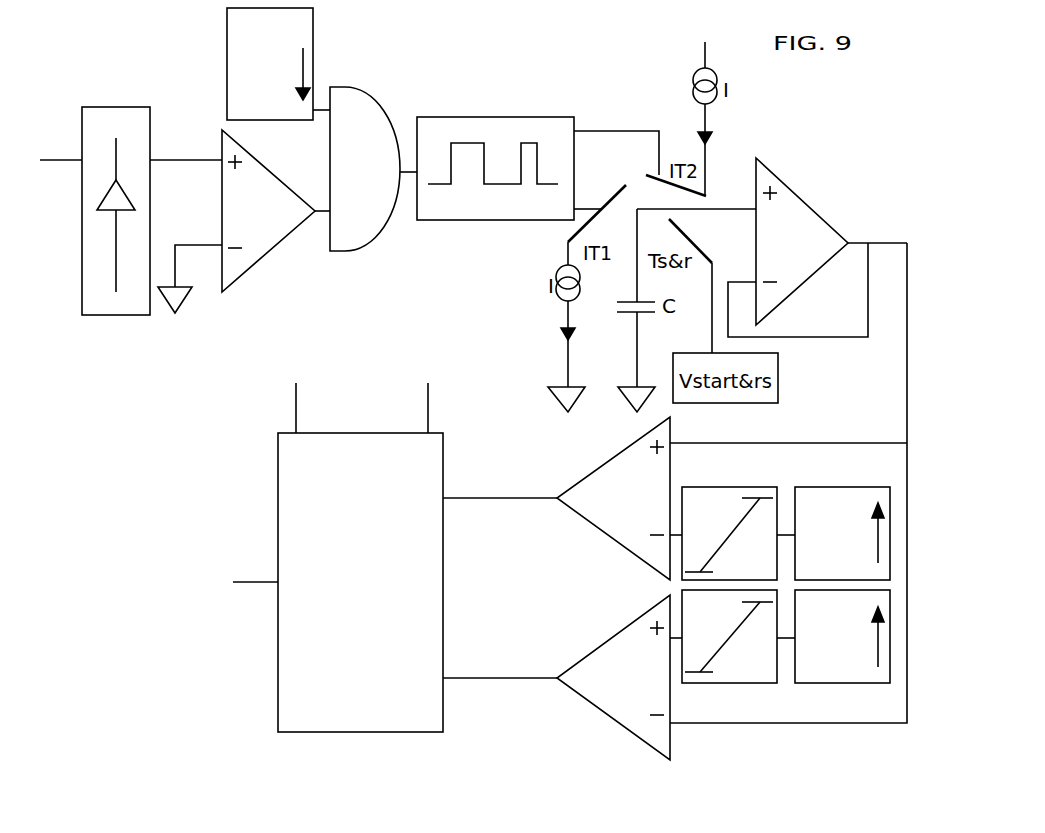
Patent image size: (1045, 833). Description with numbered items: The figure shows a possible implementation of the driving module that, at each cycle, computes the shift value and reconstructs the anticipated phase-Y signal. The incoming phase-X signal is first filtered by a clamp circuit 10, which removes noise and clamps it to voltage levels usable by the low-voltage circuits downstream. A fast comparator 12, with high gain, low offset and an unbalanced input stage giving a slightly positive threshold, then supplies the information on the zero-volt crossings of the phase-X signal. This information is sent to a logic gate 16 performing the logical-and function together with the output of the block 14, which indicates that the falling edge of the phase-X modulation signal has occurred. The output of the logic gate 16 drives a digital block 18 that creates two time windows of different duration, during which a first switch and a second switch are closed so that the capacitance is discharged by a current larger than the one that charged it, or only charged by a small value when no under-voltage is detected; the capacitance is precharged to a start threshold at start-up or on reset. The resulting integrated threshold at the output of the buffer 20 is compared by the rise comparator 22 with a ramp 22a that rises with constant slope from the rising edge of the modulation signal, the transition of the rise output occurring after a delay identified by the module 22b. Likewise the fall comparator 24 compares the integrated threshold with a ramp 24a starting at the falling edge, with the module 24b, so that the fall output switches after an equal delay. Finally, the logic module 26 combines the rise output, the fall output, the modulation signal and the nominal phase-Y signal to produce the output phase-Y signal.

The clamp circuit 10 is at (97, 298).
The fast comparator 12 is at (270, 238).
The block 14 is at (240, 28).
The AND logic gate 16 is at (350, 103).
The digital block 18 is at (562, 133).
The buffer 20 is at (797, 208).
The comparator COMPrise 22 is at (620, 463).
The ramp 22a is at (713, 493).
The module 22b is at (827, 497).
The comparator COMPfall 24 is at (615, 708).
The ramp 24a is at (750, 675).
The module 24b is at (835, 673).
The logic module 26 is at (298, 653).